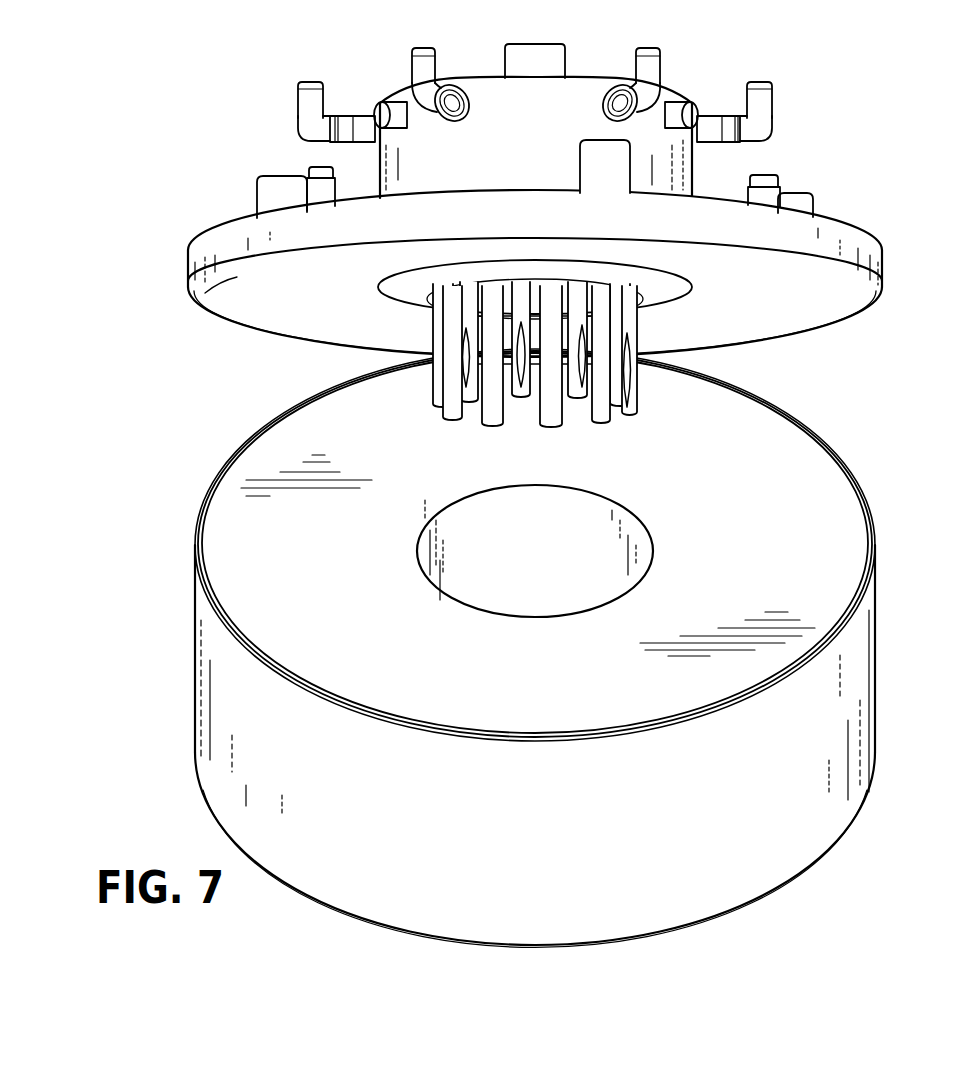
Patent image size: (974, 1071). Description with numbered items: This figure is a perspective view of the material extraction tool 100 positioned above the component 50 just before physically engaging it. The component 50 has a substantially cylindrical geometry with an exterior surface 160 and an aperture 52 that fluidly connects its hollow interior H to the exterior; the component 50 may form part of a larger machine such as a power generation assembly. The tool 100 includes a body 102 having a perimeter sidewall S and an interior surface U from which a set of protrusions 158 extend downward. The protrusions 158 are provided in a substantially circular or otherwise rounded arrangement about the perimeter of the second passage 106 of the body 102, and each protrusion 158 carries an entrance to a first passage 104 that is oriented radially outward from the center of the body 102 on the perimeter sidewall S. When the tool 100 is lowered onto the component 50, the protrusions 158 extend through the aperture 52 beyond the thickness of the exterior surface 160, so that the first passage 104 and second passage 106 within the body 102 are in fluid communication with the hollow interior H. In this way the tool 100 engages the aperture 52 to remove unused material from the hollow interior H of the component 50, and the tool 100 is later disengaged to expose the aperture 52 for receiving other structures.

The tool 100 is at (383, 77).
The body 102 is at (642, 130).
The first passage 104 is at (427, 88).
The second passage 106 is at (538, 62).
The protrusions 158 is at (603, 325).
The exterior surface 160 is at (828, 608).
The aperture 52 is at (460, 558).
The component 50 is at (230, 699).
The interior surface U is at (190, 288).
The hollow interior H is at (605, 549).
The perimeter sidewall S is at (469, 171).